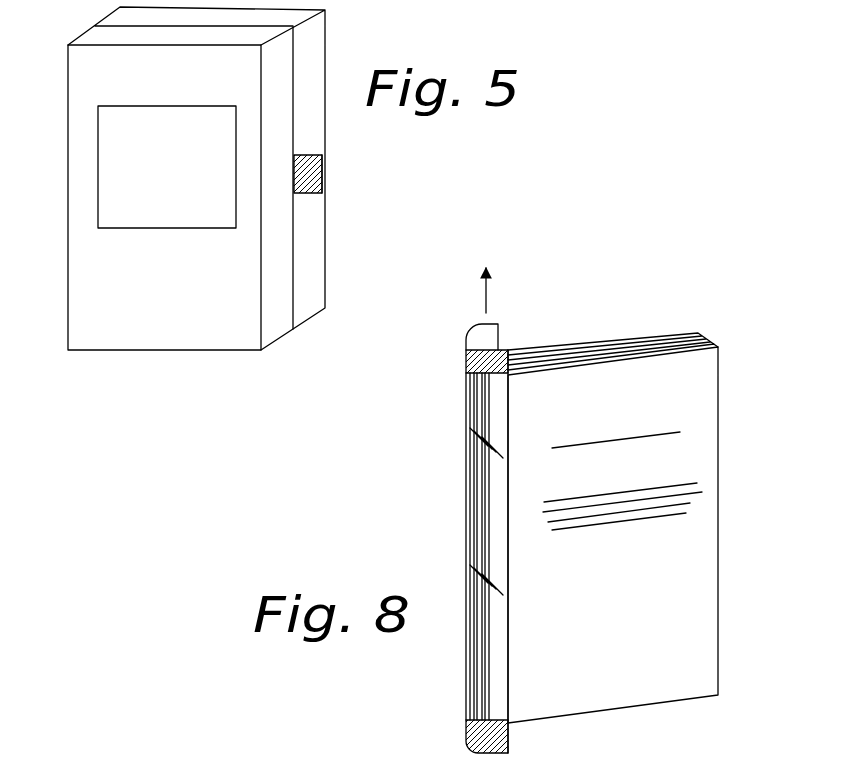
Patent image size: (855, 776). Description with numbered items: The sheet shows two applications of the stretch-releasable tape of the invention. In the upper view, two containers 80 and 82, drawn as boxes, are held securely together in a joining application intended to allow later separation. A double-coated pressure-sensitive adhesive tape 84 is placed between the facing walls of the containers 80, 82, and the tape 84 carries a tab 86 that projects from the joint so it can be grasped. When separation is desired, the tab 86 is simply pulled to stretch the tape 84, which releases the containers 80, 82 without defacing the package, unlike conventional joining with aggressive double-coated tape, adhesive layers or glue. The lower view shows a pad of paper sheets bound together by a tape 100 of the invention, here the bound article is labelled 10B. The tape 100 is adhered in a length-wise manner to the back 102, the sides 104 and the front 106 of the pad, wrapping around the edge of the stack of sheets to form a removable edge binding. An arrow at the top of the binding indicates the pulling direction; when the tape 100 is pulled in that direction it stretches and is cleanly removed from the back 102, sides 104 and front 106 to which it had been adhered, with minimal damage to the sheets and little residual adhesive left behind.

In FIG. 5, the container 80 is at (275, 322).
In FIG. 5, the container 82 is at (317, 45).
In FIG. 5, the double-coated pressure-sensitive adhesive tape 84 is at (326, 189).
In FIG. 5, the tab 86 is at (315, 172).
In FIG. 8, the book-shaped container 10B is at (726, 395).
In FIG. 8, the tape 100 is at (464, 329).
In FIG. 8, the back 102 is at (582, 352).
In FIG. 8, the sides 104 is at (470, 474).
In FIG. 8, the front 106 is at (708, 582).